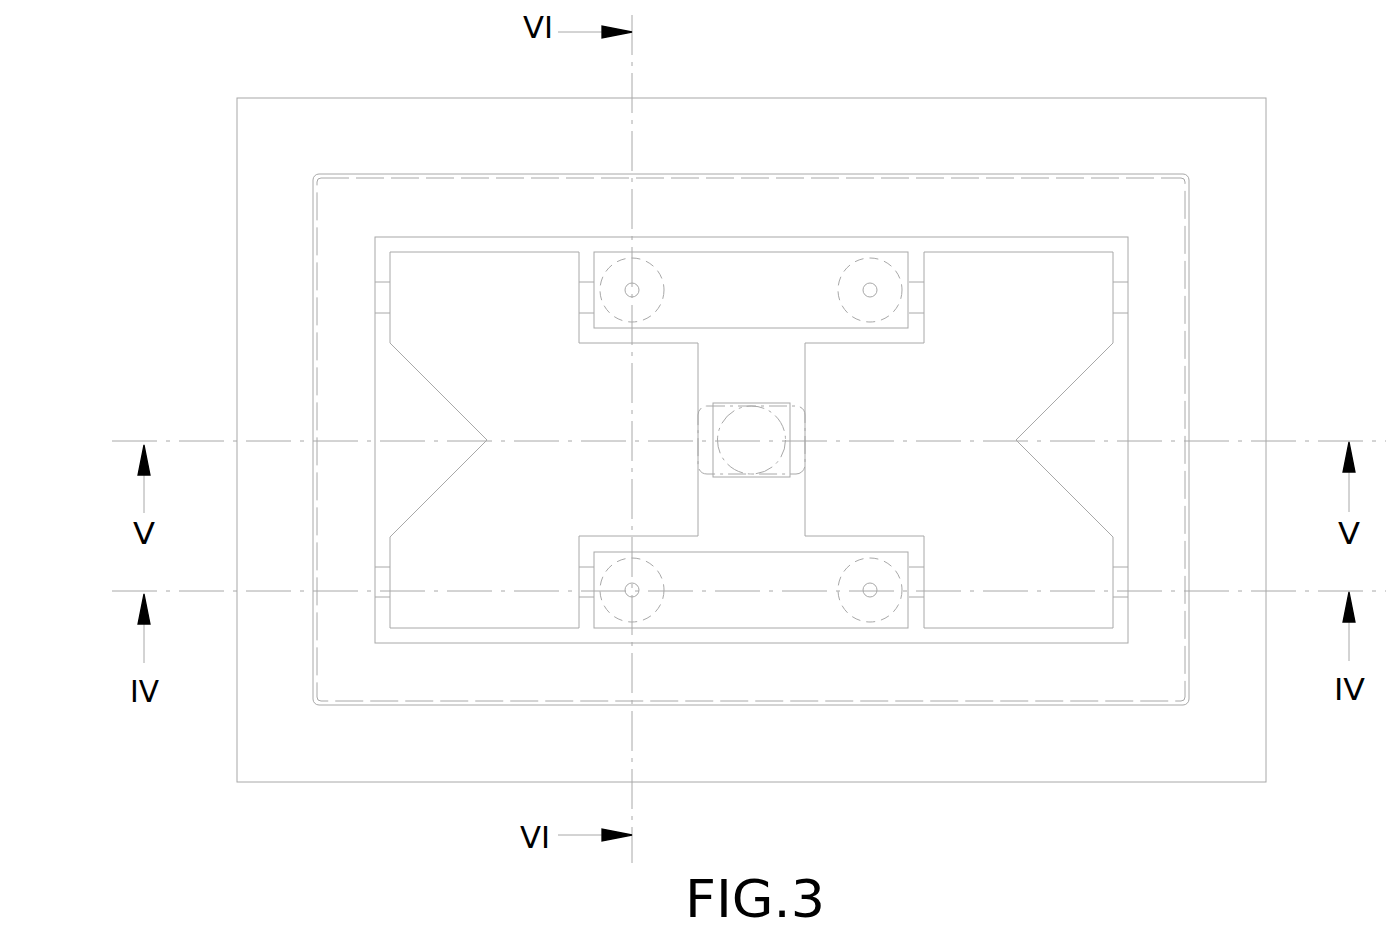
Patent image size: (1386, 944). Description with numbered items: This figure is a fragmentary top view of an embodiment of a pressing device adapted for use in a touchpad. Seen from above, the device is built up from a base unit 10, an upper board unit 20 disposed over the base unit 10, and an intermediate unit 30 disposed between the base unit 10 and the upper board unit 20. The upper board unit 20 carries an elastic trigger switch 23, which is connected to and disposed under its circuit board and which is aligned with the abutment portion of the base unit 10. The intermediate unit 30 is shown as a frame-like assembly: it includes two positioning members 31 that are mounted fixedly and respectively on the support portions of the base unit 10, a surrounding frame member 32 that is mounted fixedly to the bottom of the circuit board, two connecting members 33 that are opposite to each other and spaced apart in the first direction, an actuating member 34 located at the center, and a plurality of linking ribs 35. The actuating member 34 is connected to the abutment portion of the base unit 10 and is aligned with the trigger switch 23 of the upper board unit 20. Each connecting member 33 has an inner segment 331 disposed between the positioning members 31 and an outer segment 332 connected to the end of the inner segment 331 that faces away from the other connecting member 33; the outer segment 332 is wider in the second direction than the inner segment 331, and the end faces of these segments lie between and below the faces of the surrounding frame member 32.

The base unit 10 is at (1289, 138).
The upper board unit 20 is at (751, 434).
The trigger switch 23 is at (728, 468).
The intermediate unit 30 is at (756, 438).
The positioning member 31 is at (777, 277).
The surrounding frame member 32 is at (1167, 350).
The connecting member 33 is at (474, 530).
The inner segment 331 is at (832, 498).
The outer segment 332 is at (1050, 600).
The actuating member 34 is at (771, 477).
The linking rib 35 is at (387, 300).